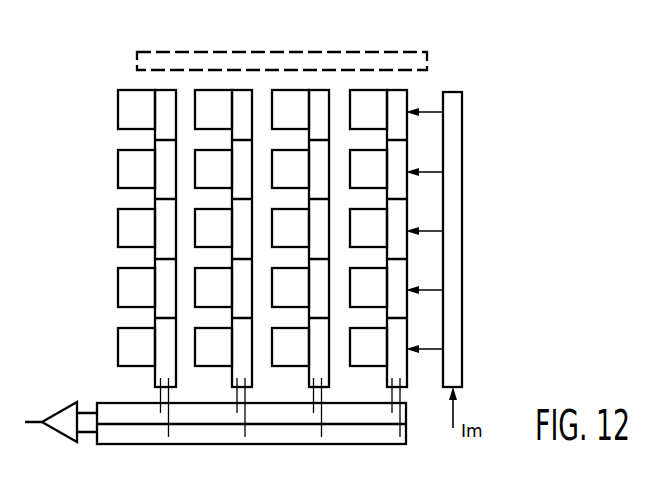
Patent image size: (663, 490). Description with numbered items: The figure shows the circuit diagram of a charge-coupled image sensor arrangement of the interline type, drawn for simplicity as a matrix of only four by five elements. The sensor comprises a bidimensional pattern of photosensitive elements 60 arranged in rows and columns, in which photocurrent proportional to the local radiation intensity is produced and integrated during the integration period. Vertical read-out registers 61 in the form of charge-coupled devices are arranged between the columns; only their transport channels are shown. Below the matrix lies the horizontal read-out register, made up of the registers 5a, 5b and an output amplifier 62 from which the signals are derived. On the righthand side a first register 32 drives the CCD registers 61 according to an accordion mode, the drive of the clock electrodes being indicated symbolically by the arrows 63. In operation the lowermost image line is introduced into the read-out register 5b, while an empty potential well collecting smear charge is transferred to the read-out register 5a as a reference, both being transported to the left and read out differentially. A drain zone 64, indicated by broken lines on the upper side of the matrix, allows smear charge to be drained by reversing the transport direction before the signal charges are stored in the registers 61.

The photosensitive elements 60 is at (124, 105).
The vertical read-out registers 61 is at (166, 97).
The drain zone 64 is at (403, 50).
The first register 32 is at (463, 103).
The arrows 63 is at (430, 113).
The output amplifier 62 is at (63, 413).
The read-out register 5a is at (358, 416).
The read-out register 5b is at (294, 440).